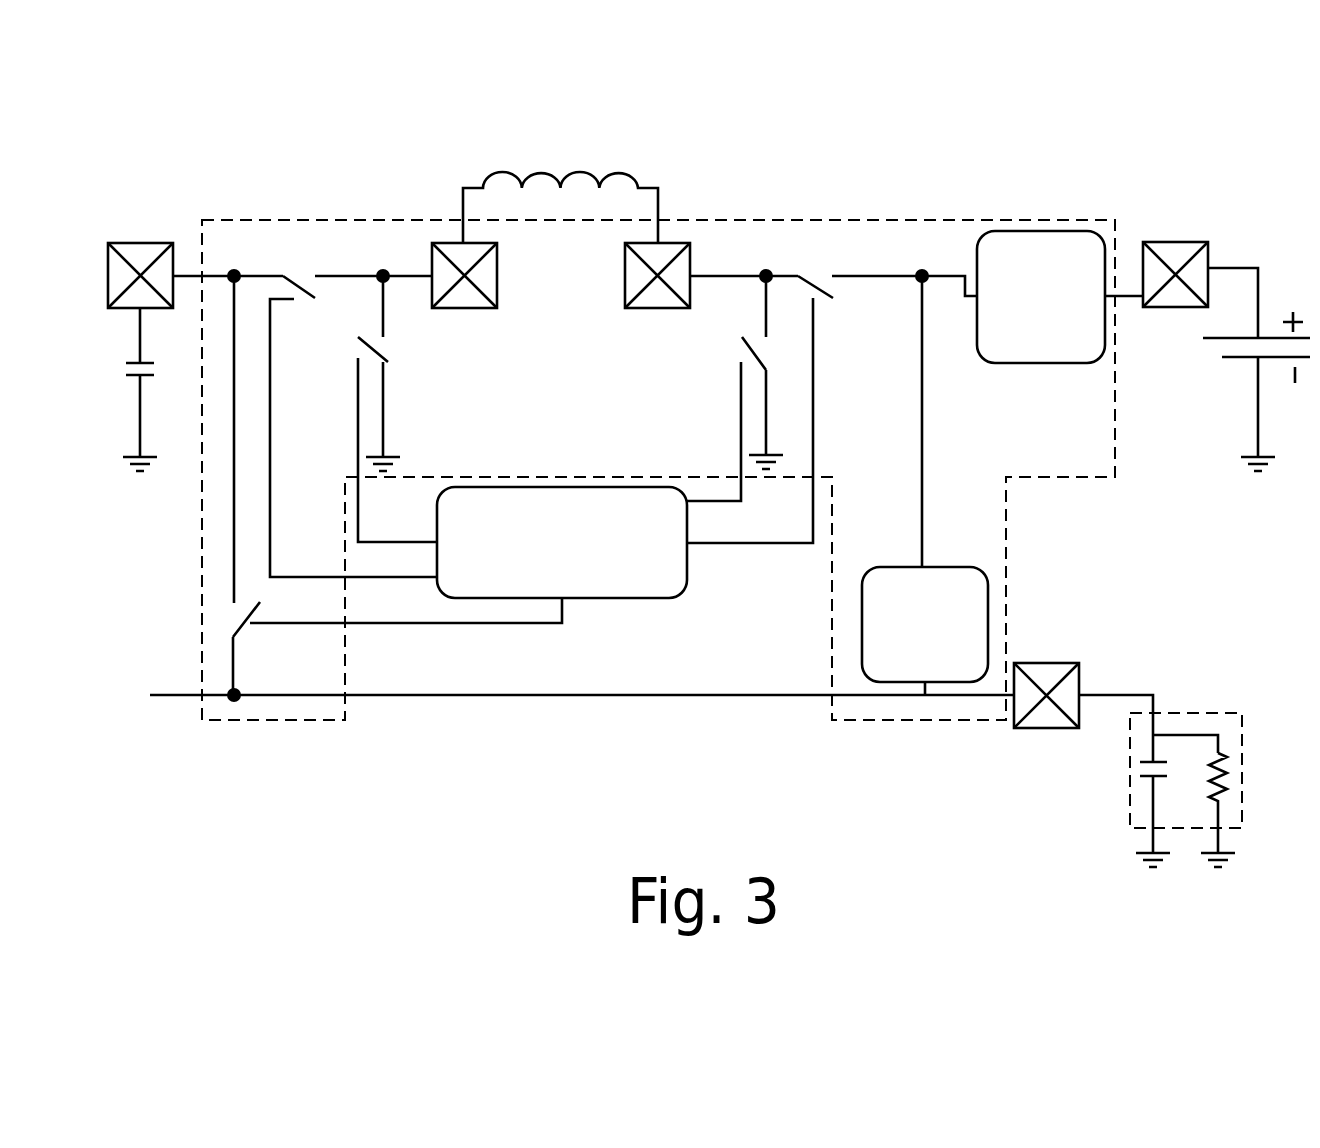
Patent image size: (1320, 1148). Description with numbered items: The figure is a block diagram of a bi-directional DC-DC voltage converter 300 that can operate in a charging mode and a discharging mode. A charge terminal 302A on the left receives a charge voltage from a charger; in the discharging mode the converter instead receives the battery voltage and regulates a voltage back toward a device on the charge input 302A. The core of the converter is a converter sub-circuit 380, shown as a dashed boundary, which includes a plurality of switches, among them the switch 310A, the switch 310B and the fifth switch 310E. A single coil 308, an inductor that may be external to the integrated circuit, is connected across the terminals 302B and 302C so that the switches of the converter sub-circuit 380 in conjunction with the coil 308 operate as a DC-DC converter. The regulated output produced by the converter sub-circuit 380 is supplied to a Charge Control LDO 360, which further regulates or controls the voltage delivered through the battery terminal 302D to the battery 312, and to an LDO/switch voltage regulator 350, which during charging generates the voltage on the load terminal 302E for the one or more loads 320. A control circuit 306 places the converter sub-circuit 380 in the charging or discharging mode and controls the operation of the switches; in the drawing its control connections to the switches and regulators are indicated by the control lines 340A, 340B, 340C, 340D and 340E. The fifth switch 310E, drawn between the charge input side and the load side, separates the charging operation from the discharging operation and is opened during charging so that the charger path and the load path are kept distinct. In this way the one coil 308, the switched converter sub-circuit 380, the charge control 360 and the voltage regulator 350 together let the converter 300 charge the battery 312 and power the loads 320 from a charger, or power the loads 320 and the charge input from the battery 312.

The voltage converter 300 is at (649, 107).
The charge terminal 302A is at (141, 243).
The terminal 302B is at (441, 243).
The terminal 302C is at (620, 292).
The battery terminal 302D is at (740, 353).
The load terminal 302E is at (1047, 655).
The control circuit 306 is at (562, 542).
The coil 308 is at (544, 165).
The switch 310A is at (299, 270).
The switch 310B is at (389, 358).
The fifth switch 310E is at (250, 640).
The battery 312 is at (1208, 350).
The load outputs 320 is at (1187, 703).
The control line 340A is at (275, 430).
The control line 340B is at (362, 527).
The control line 340C is at (785, 550).
The control line 340D is at (733, 436).
The control line 340E is at (511, 630).
The voltage regulator 350 is at (582, 631).
The charge control 360 is at (1013, 399).
The converter sub-circuit 380 is at (817, 220).